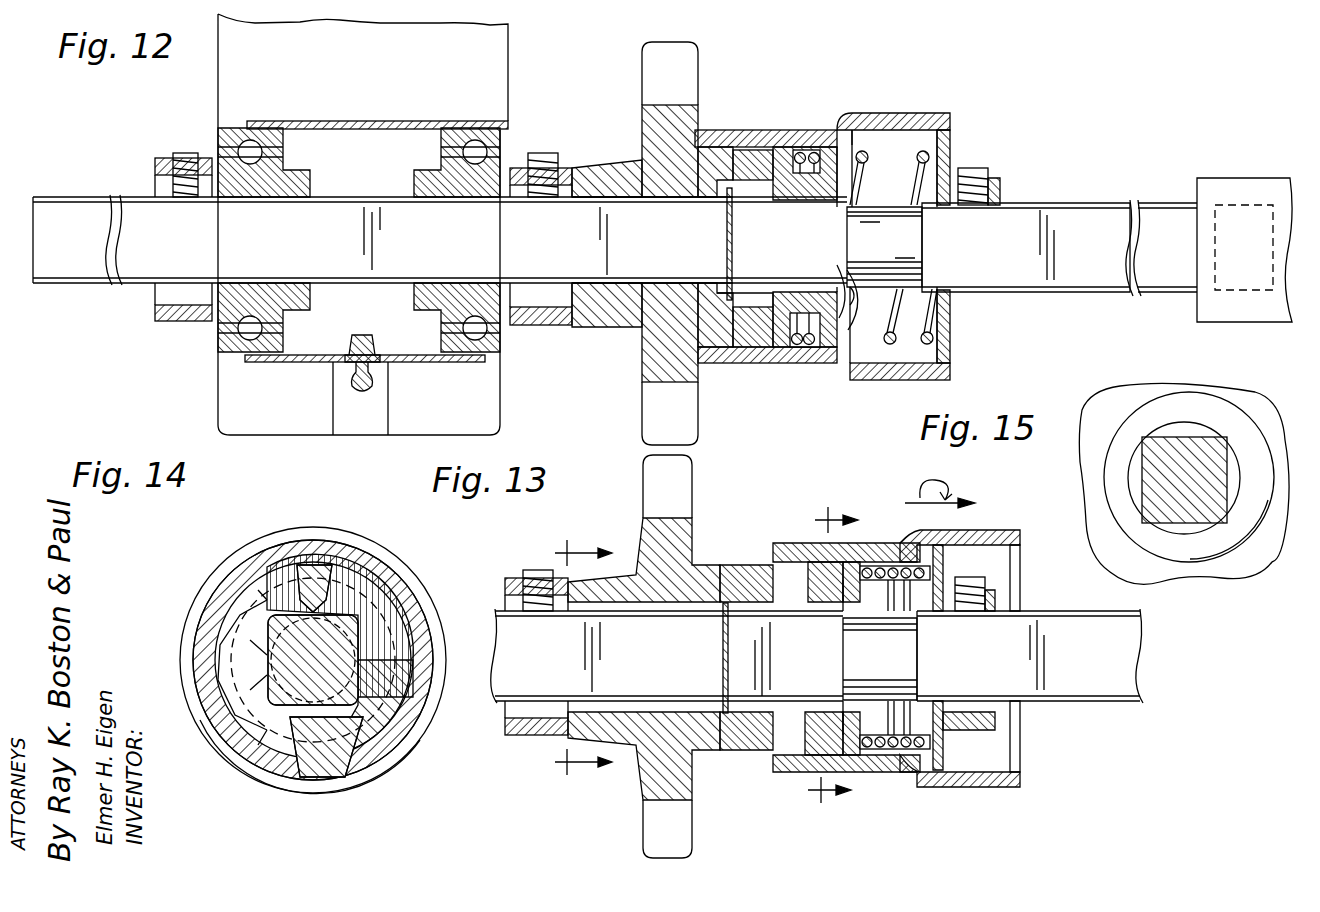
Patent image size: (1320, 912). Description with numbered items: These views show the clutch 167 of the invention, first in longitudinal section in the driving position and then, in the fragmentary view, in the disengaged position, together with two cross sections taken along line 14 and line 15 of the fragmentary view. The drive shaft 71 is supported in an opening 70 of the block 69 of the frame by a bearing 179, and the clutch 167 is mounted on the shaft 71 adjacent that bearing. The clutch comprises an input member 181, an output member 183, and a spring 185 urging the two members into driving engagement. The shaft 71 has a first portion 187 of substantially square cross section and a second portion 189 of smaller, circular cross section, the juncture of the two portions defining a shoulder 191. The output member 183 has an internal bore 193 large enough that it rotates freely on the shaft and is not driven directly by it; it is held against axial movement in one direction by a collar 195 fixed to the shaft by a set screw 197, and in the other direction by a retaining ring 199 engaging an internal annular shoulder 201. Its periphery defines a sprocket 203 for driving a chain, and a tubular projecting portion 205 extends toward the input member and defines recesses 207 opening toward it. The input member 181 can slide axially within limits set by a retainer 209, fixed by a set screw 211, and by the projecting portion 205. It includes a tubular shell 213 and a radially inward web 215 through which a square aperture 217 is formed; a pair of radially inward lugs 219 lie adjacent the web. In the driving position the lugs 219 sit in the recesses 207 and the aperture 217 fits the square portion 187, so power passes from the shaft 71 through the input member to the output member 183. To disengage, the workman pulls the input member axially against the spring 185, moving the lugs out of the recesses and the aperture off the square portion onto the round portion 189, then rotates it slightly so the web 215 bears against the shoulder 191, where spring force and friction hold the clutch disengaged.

In FIG. 12, the block 69 is at (490, 60).
In FIG. 12, the opening 70 is at (505, 120).
In FIG. 12, the drive shaft 71 is at (72, 215).
In FIG. 13, the drive shaft 71 is at (817, 656).
In FIG. 15, the drive shaft 71 is at (1200, 510).
In FIG. 12, the bearing 179 is at (232, 168).
In FIG. 12, the collar 195 is at (530, 322).
In FIG. 13, the collar 195 is at (528, 723).
In FIG. 12, the set screw 197 is at (545, 155).
In FIG. 13, the set screw 197 is at (538, 590).
In FIG. 12, the output member 183 is at (612, 164).
In FIG. 13, the output member 183 is at (628, 560).
In FIG. 15, the output member 183 is at (1162, 405).
In FIG. 12, the sprocket 203 is at (662, 55).
In FIG. 13, the sprocket 203 is at (667, 656).
In FIG. 12, the retaining ring 199 is at (720, 175).
In FIG. 12, the internal annular shoulder 201 is at (728, 300).
In FIG. 12, the recesses or grooves 207 is at (752, 143).
In FIG. 13, the recesses or grooves 207 is at (735, 570).
In FIG. 12, the tubular projecting portion 205 is at (728, 340).
In FIG. 12, the web 215 is at (805, 170).
In FIG. 13, the web 215 is at (862, 752).
In FIG. 14, the web 215 is at (345, 620).
In FIG. 12, the lugs 219 is at (738, 270).
In FIG. 13, the lugs 219 is at (818, 710).
In FIG. 14, the lugs 219 is at (305, 760).
In FIG. 12, the aperture 217 is at (838, 300).
In FIG. 13, the aperture 217 is at (860, 560).
In FIG. 14, the aperture 217 is at (255, 660).
In FIG. 12, the second portion 189 is at (884, 247).
In FIG. 13, the second portion 189 is at (880, 659).
In FIG. 14, the second portion 189 is at (345, 720).
In FIG. 12, the input member 181 is at (905, 112).
In FIG. 13, the input member 181 is at (995, 522).
In FIG. 12, the clutch 167 is at (862, 110).
In FIG. 12, the first portion 187 is at (830, 205).
In FIG. 14, the first portion 187 is at (370, 615).
In FIG. 12, the spring 185 is at (888, 345).
In FIG. 13, the spring 185 is at (918, 755).
In FIG. 12, the shoulder 191 is at (850, 355).
In FIG. 12, the tubular shell 213 is at (950, 372).
In FIG. 14, the tubular shell 213 is at (232, 570).
In FIG. 12, the retainer 209 is at (955, 145).
In FIG. 13, the retainer 209 is at (938, 755).
In FIG. 12, the set screw 211 is at (985, 170).
In FIG. 13, the set screw 211 is at (969, 653).
In FIG. 12, the internal bore 193 is at (625, 305).
In FIG. 15, the internal bore 193 is at (1195, 430).
In FIG. 13, the section line 14- 14 is at (890, 651).
In FIG. 13, the section line 15- 15 is at (580, 660).